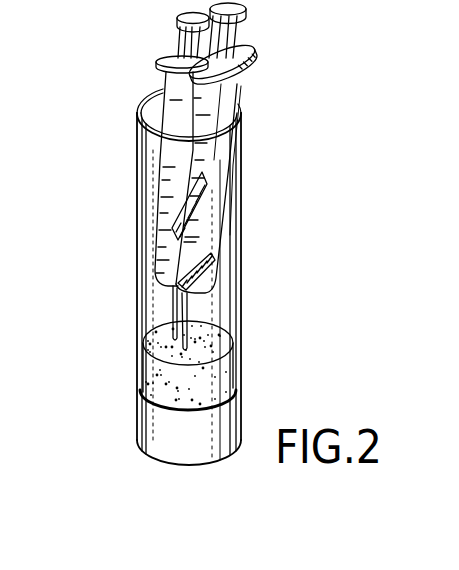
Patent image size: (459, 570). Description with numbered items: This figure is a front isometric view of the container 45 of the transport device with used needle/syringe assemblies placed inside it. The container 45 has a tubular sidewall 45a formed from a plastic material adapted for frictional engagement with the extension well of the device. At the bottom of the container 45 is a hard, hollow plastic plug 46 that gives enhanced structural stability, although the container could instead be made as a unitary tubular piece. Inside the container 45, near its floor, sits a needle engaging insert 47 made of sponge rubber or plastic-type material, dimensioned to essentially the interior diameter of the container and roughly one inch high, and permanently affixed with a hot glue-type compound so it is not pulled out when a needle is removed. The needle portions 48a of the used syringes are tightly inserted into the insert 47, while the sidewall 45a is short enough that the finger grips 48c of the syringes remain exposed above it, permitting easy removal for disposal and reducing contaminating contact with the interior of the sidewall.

The container 45 is at (114, 253).
The tubular sidewall 45a is at (137, 103).
The plug 46 is at (176, 378).
The needle engaging insert 47 is at (210, 346).
The needle portion 48a is at (172, 299).
The finger grip 48c is at (170, 58).